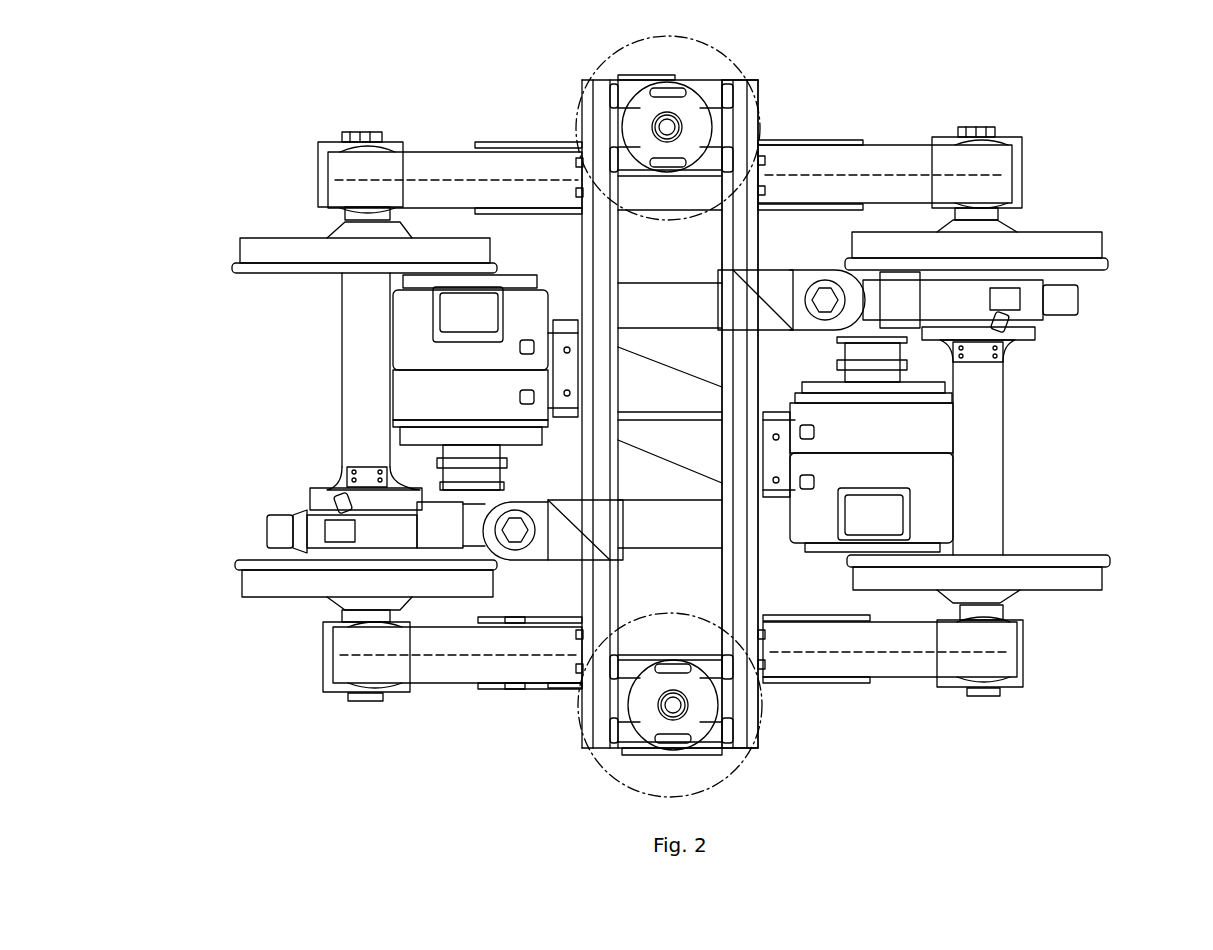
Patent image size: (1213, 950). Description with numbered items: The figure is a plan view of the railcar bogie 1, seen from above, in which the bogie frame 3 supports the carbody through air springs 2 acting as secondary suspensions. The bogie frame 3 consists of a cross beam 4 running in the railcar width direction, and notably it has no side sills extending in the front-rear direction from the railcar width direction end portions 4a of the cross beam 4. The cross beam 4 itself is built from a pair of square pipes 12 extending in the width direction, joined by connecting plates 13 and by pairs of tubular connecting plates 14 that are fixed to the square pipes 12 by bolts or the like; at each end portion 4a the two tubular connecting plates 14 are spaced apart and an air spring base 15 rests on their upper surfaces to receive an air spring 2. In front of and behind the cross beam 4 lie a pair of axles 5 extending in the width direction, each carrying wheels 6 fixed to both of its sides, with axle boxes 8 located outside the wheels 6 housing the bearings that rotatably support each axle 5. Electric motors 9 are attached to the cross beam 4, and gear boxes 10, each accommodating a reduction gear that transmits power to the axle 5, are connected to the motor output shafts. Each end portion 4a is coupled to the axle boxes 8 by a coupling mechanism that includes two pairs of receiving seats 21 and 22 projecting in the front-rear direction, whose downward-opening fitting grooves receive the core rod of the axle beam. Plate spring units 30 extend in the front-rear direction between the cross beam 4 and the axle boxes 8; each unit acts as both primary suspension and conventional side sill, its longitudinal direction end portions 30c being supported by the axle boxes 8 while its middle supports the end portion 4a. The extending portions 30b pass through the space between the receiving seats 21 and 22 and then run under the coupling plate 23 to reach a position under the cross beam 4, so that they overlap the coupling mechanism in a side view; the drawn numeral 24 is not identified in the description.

The railcar bogie 1 is at (245, 158).
The air spring 2 is at (585, 60).
The bogie frame 3 is at (667, 417).
The cross beam 4 is at (750, 124).
The railcar width direction end portion 4a is at (600, 78).
The axle 5 is at (342, 393).
The wheel 6 is at (240, 253).
The axle box 8 is at (325, 142).
The electric motor 9 is at (400, 330).
The gear box 10 is at (267, 515).
The square pipe 12 is at (600, 250).
The connecting plate 13 is at (672, 290).
The tubular connecting plate 14 is at (632, 752).
The air spring base 15 is at (633, 102).
The receiving seat 21 is at (520, 618).
The receiving seat 22 is at (515, 690).
The coupling plate 23 is at (565, 660).
The fastening bolt 24 is at (566, 640).
The plate spring unit 30 is at (670, 445).
The extending portion 30b is at (438, 685).
The longitudinal direction end portion 30c is at (362, 690).